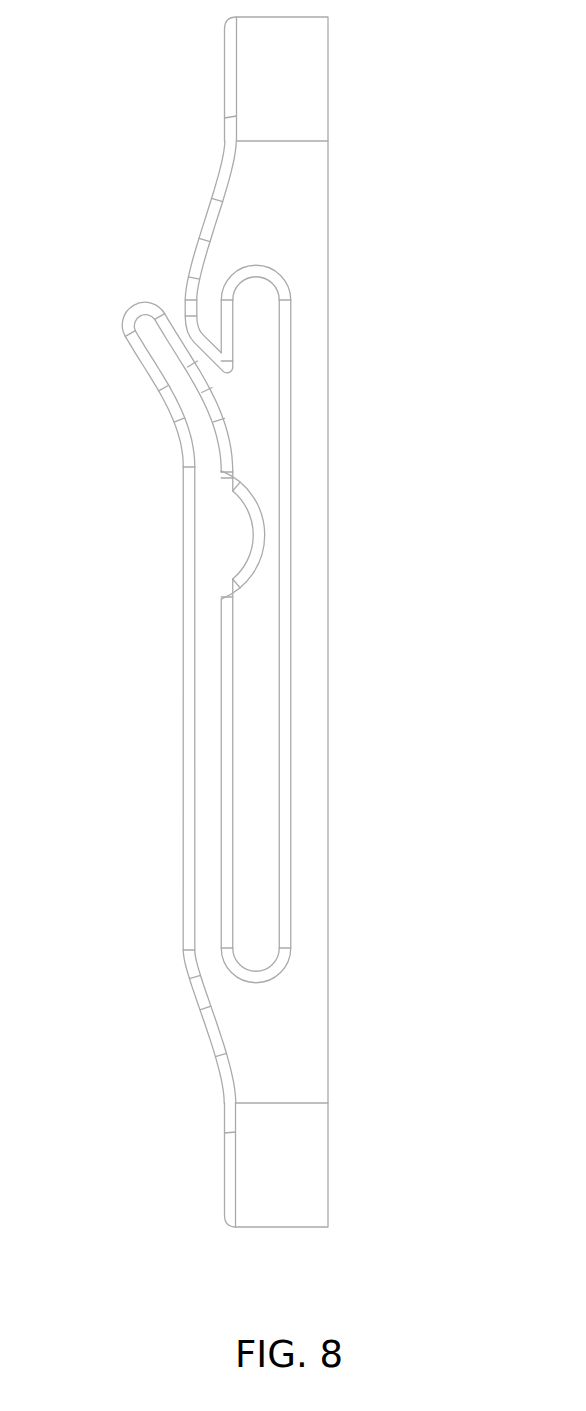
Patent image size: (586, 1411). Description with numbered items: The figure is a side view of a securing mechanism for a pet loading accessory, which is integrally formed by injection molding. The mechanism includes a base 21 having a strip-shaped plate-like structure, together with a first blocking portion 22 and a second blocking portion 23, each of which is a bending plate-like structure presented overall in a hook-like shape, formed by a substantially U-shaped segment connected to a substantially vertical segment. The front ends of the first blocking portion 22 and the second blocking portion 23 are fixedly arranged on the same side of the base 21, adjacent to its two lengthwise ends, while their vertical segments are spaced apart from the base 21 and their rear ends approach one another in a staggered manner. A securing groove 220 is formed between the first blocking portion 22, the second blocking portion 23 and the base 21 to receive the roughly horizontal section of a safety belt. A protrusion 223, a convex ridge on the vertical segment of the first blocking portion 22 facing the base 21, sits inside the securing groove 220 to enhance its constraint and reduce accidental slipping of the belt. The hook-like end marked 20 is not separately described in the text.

The hook portion 20 is at (172, 312).
The base 21 is at (317, 417).
The first blocking portion 22 is at (207, 697).
The second blocking portion 23 is at (208, 318).
The securing groove 220 is at (263, 742).
The protrusion 223 is at (253, 535).